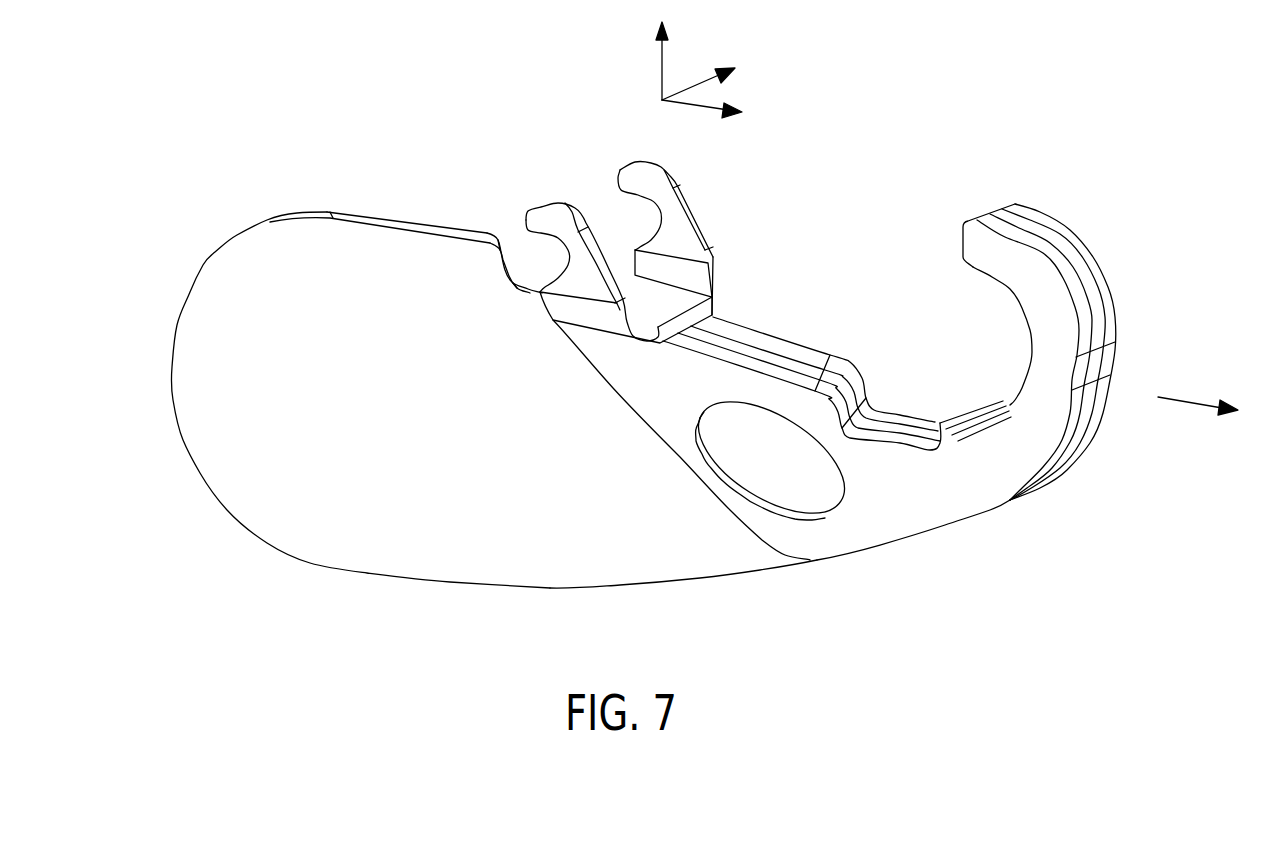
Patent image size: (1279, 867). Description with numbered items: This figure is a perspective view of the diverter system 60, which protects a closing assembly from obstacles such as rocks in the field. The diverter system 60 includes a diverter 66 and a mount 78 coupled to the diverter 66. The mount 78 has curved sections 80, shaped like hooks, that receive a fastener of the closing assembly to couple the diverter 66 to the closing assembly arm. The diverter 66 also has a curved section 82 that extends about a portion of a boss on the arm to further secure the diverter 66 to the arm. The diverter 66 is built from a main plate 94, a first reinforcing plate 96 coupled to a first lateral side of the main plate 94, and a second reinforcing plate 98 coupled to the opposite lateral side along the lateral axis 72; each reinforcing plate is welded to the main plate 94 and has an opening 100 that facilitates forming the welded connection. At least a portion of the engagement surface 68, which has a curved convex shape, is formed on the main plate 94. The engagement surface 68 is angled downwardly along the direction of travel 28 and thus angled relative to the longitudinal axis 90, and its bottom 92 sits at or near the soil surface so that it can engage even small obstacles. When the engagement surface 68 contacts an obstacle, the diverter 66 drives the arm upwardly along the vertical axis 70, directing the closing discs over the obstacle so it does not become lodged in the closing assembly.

The direction of travel 28 is at (1193, 400).
The diverter system 60 is at (280, 196).
The diverter 66 is at (218, 282).
The engagement surface 68 is at (743, 575).
The vertical axis 70 is at (662, 65).
The lateral axis 72 is at (692, 80).
The mount 78 is at (662, 214).
The curved sections 80 is at (563, 200).
The curved section 82 is at (924, 338).
The longitudinal axis 90 is at (698, 103).
The bottom 92 is at (368, 575).
The main plate 94 is at (383, 525).
The first reinforcing plate 96 is at (948, 513).
The second reinforcing plate 98 is at (1027, 210).
The opening 100 is at (783, 418).